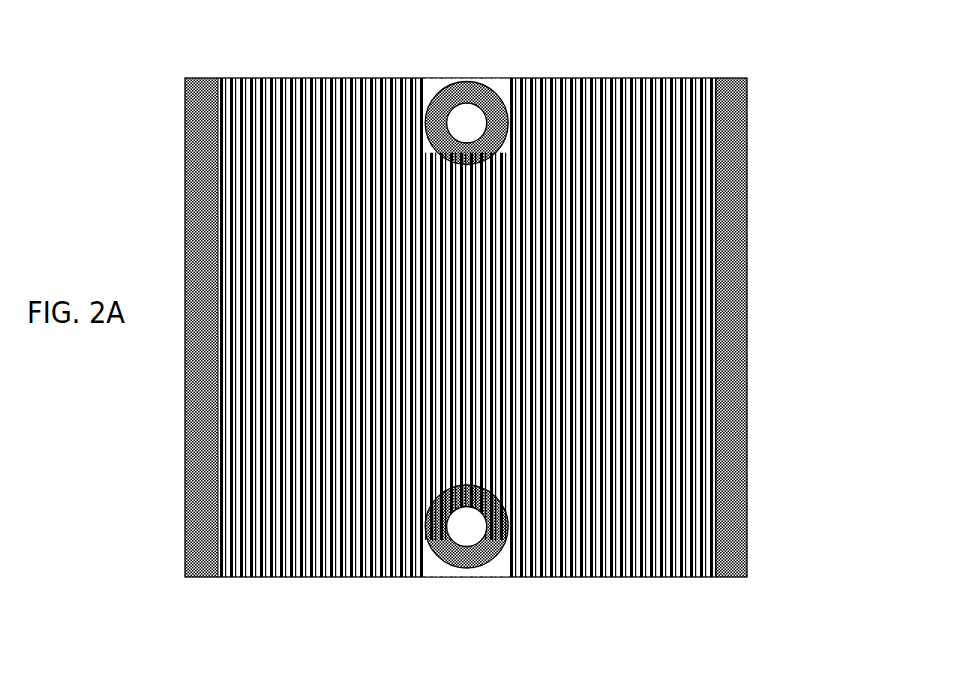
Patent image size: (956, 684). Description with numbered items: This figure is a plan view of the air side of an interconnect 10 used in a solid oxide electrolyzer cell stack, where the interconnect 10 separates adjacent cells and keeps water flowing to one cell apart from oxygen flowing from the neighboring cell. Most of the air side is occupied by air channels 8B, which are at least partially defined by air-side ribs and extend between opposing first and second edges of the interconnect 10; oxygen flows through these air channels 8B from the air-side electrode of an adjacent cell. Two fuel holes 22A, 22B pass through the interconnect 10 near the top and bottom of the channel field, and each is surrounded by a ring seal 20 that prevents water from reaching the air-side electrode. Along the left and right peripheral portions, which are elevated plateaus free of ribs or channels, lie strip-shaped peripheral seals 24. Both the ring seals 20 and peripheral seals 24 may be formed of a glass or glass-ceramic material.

The interconnect 10 is at (155, 131).
The air channels 8B is at (635, 420).
The ring seals 20 is at (437, 558).
The fuel hole 22A is at (467, 103).
The fuel hole 22B is at (463, 550).
The peripheral seals 24 is at (747, 314).